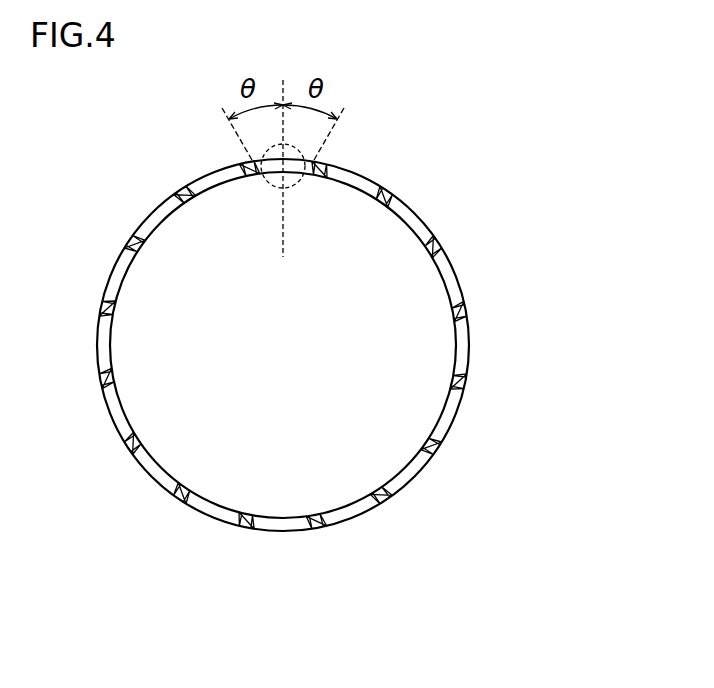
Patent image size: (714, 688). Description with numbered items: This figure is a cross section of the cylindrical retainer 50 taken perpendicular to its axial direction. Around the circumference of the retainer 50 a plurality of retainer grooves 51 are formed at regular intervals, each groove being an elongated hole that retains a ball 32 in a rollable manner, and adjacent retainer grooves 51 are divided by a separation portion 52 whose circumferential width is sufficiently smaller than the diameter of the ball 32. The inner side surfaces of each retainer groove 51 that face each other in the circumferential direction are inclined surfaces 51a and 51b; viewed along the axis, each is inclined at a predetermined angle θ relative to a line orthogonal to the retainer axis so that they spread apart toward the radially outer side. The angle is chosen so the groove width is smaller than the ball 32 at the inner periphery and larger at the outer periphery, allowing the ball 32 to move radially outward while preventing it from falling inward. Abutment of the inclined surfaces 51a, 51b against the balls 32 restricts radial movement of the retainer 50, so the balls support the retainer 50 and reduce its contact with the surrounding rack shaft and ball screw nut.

The retainer 50 is at (311, 315).
The retainer groove 51 is at (373, 190).
The inclined surface 51a is at (246, 164).
The inclined surface 51b is at (318, 165).
The separation portion 52 is at (437, 244).
The ball 32 is at (296, 186).